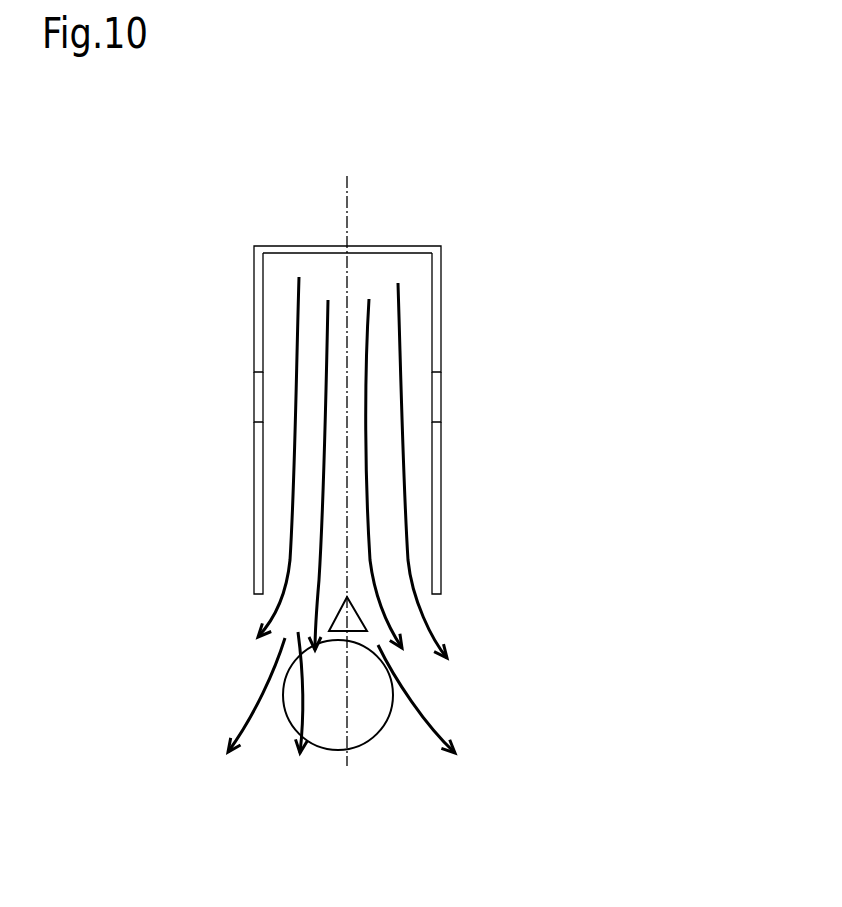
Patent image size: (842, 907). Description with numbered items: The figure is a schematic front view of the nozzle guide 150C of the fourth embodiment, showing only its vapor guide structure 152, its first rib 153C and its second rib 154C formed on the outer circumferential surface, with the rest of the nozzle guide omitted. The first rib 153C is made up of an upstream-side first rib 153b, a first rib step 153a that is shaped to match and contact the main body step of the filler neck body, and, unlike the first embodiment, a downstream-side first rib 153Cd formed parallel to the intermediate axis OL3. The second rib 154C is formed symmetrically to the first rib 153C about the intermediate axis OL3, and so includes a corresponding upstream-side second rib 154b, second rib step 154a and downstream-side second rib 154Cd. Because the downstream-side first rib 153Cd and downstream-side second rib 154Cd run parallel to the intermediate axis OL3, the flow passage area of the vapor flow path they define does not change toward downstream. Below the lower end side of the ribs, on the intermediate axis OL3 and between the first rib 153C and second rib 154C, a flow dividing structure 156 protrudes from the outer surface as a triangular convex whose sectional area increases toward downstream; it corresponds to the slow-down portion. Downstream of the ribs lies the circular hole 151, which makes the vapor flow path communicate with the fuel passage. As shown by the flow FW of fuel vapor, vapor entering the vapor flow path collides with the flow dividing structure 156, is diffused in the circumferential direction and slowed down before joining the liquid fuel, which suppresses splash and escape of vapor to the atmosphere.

The nozzle guide 150C is at (471, 197).
The vapor guide structure 152 is at (277, 246).
The first rib 153C is at (148, 354).
The first rib step 153a is at (254, 402).
The upstream-side first rib 153b is at (253, 351).
The downstream-side first rib 153Cd is at (257, 485).
The second rib 154C is at (551, 354).
The second rib step 154a is at (441, 400).
The upstream-side second rib 154b is at (442, 355).
The downstream-side second rib 154Cd is at (441, 494).
The circular hole 151 is at (334, 737).
The flow dividing structure 156 is at (360, 632).
The intermediate axis OL3 is at (346, 457).
The flow of fuel vapor FW is at (433, 622).